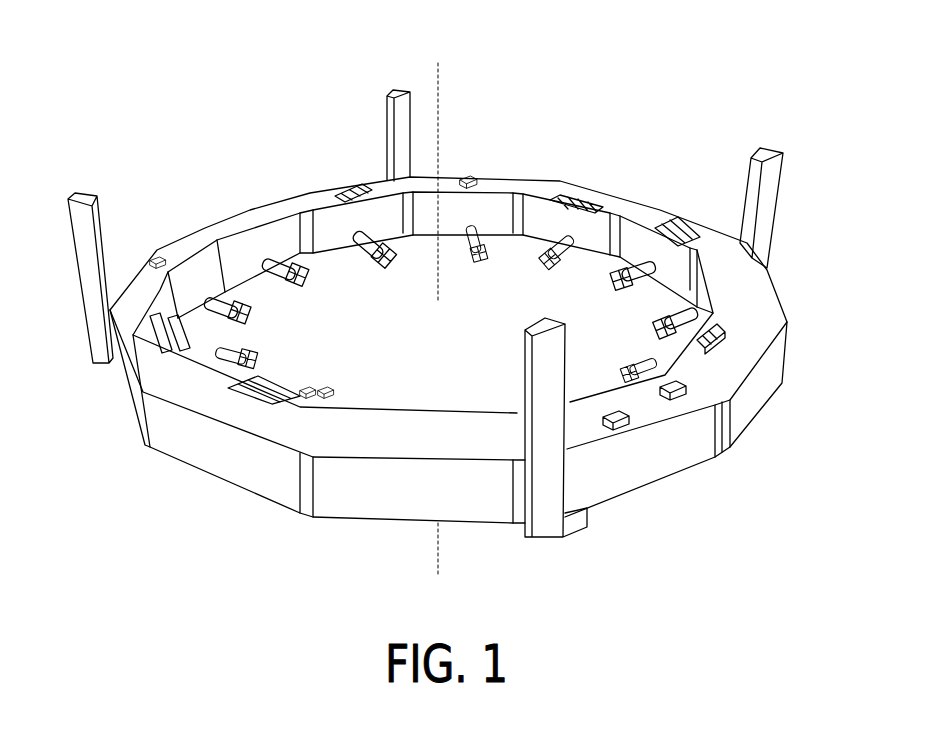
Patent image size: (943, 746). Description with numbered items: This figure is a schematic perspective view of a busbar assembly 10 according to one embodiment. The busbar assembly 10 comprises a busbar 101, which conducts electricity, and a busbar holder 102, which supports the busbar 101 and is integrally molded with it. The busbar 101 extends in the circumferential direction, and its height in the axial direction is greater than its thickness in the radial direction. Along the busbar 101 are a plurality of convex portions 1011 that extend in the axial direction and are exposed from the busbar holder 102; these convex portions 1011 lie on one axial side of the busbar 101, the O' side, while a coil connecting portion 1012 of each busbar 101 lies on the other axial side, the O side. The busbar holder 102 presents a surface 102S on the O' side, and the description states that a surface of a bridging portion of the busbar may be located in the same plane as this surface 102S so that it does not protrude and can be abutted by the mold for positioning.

The busbar assembly 10 is at (250, 39).
The busbar 101 is at (200, 318).
The convex portions 1011 is at (715, 352).
The coil connecting portion 1012 is at (660, 312).
The busbar holder 102 is at (360, 430).
The surface on one axial side of the busbar holder 102S is at (123, 397).